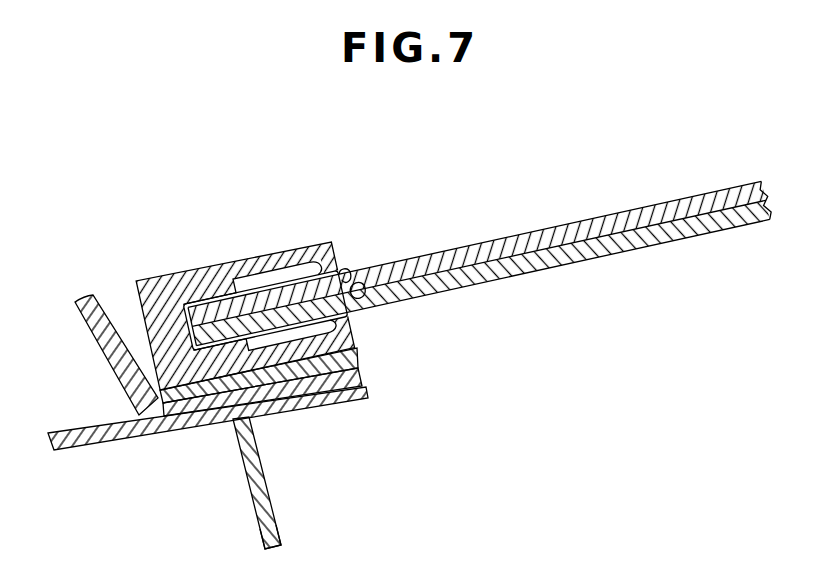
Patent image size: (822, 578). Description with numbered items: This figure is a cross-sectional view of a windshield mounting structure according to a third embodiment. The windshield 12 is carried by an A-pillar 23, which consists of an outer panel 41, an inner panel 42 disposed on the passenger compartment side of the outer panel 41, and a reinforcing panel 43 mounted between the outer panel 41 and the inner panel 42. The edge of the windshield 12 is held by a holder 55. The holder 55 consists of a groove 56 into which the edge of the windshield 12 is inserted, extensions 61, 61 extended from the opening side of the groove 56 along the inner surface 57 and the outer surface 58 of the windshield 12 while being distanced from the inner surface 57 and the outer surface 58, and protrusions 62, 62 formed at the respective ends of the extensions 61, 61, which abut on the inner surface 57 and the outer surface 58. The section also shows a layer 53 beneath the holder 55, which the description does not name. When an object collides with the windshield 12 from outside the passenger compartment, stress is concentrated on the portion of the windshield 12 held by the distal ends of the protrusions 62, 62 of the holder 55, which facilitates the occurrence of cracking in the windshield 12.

The windshield 12 is at (649, 206).
The A-pillar 23 is at (284, 533).
The outer panel 41 is at (100, 300).
The inner panel 42 is at (262, 462).
The reinforcing panel 43 is at (93, 445).
The conductive layer 53 is at (356, 350).
The holder 55 is at (227, 261).
The groove 56 is at (185, 302).
The inner surface 57 is at (577, 262).
The outer surface 58 is at (533, 231).
The extensions 61 is at (272, 252).
The protrusions 62 is at (363, 268).